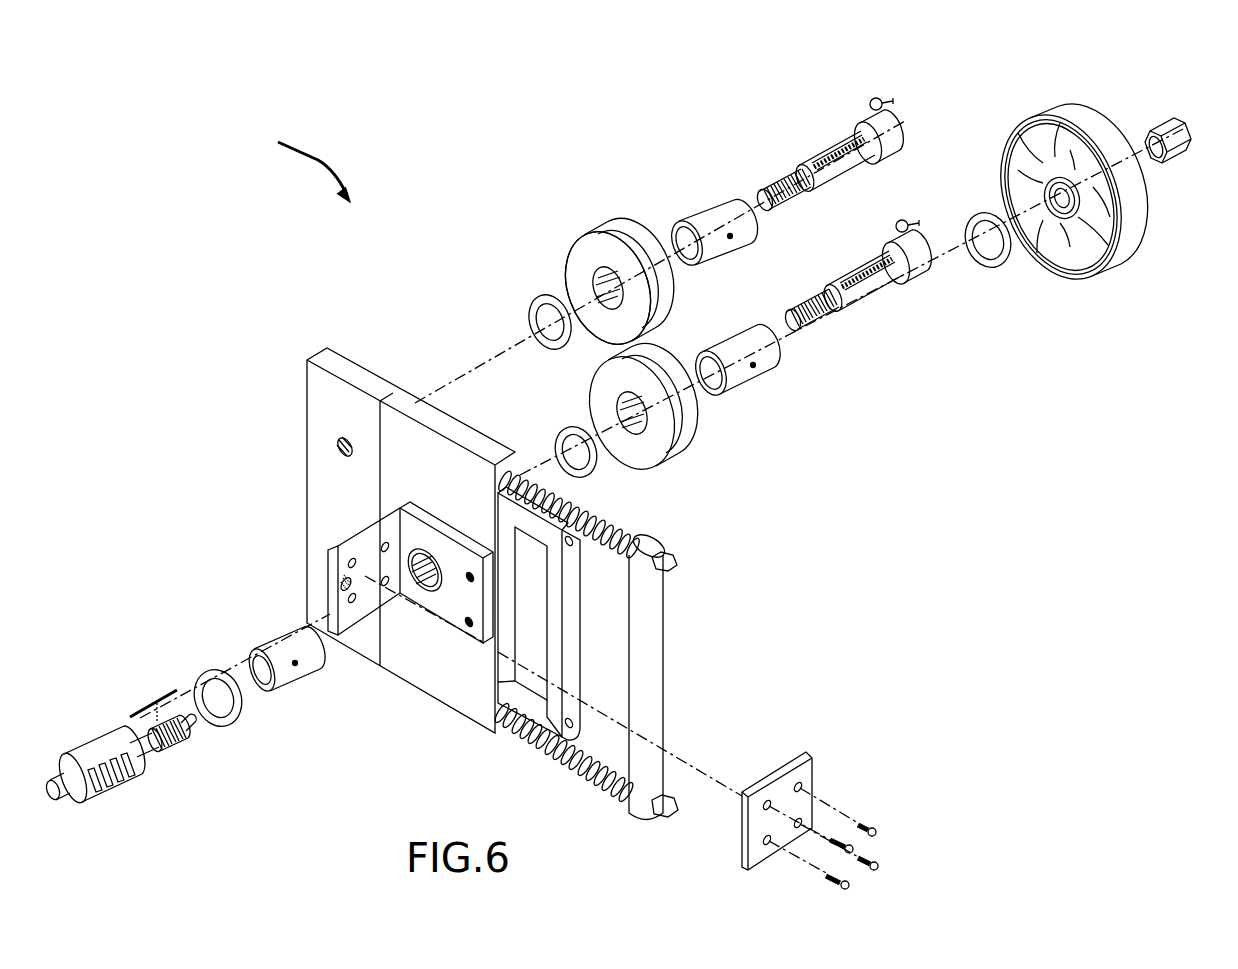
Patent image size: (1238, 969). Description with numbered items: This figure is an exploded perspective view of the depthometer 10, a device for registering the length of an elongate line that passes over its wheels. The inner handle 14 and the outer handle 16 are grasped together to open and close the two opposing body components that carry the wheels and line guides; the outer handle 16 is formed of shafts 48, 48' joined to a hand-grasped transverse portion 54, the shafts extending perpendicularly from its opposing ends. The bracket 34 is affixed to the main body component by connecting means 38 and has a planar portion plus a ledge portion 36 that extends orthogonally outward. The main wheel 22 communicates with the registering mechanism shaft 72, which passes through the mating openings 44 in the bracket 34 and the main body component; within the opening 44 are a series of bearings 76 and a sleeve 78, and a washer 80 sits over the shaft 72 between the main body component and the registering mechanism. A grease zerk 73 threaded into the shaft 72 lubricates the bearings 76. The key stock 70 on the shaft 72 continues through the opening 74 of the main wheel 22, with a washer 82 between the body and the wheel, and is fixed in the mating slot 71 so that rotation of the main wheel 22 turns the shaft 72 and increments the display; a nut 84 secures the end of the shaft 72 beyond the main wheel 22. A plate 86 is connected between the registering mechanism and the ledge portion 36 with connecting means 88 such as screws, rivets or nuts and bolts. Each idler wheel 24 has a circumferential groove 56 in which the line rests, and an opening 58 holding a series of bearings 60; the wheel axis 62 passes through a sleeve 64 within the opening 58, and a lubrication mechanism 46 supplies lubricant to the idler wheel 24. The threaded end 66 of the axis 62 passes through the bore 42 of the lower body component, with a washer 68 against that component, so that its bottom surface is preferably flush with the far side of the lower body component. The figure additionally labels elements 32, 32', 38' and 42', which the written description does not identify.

The depthometer 10 is at (297, 158).
The inner handle 14 is at (574, 590).
The outer handle 16 is at (666, 601).
The main wheel 22 is at (1135, 247).
The idler wheel 24 is at (617, 228).
The spring 32 is at (572, 514).
The spring 32' is at (560, 769).
The bracket 34 is at (440, 548).
The ledge portion 36 is at (350, 553).
The connecting means 38 is at (462, 535).
The hole 38' is at (456, 651).
The mating opening 42 is at (308, 424).
The threaded hole 42' is at (297, 577).
The mating openings 44 is at (428, 590).
The lubrication mechanism 46 is at (878, 102).
The shaft 48 is at (655, 529).
The shaft 48' is at (609, 811).
The transverse portion 54 is at (650, 778).
The groove 56 is at (632, 231).
The opening 58 is at (598, 320).
The bearings 60 is at (592, 270).
The wheel axis 62 is at (806, 178).
The sleeve 64 is at (697, 220).
The threaded end 66 is at (765, 192).
The washer 68 is at (530, 310).
The key stock 70 is at (166, 691).
The mating slot 71 is at (1068, 190).
The registering mechanism shaft 72 is at (138, 760).
The grease zerk 73 is at (194, 724).
The opening 74 is at (1062, 212).
The bearings 76 is at (428, 556).
The sleeve 78 is at (292, 677).
The washer 80 is at (240, 712).
The washer 82 is at (988, 268).
The nut 84 is at (1172, 124).
The plate 86 is at (813, 773).
The connecting means 88 is at (867, 822).